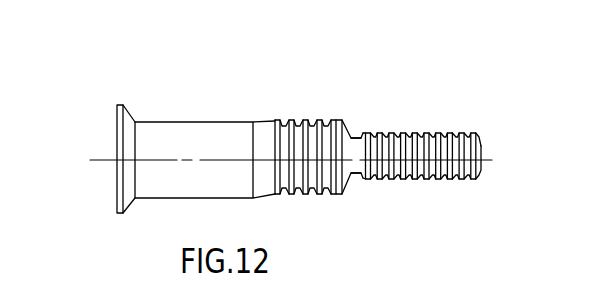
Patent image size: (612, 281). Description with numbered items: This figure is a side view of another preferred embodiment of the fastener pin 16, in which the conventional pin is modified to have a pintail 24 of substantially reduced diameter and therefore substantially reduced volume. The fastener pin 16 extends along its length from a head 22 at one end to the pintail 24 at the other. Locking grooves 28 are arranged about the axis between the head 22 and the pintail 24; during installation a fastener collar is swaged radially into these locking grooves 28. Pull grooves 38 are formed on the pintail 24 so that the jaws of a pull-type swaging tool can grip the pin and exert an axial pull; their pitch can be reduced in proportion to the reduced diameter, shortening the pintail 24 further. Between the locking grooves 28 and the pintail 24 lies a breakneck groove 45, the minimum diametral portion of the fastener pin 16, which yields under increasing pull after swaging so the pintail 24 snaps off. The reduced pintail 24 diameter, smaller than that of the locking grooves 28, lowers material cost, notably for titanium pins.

The fastener pin 16 is at (276, 134).
The head 22 is at (116, 131).
The pintail 24 is at (400, 178).
The locking grooves 28 is at (315, 121).
The pull grooves 38 is at (414, 131).
The breakneck groove 45 is at (347, 137).